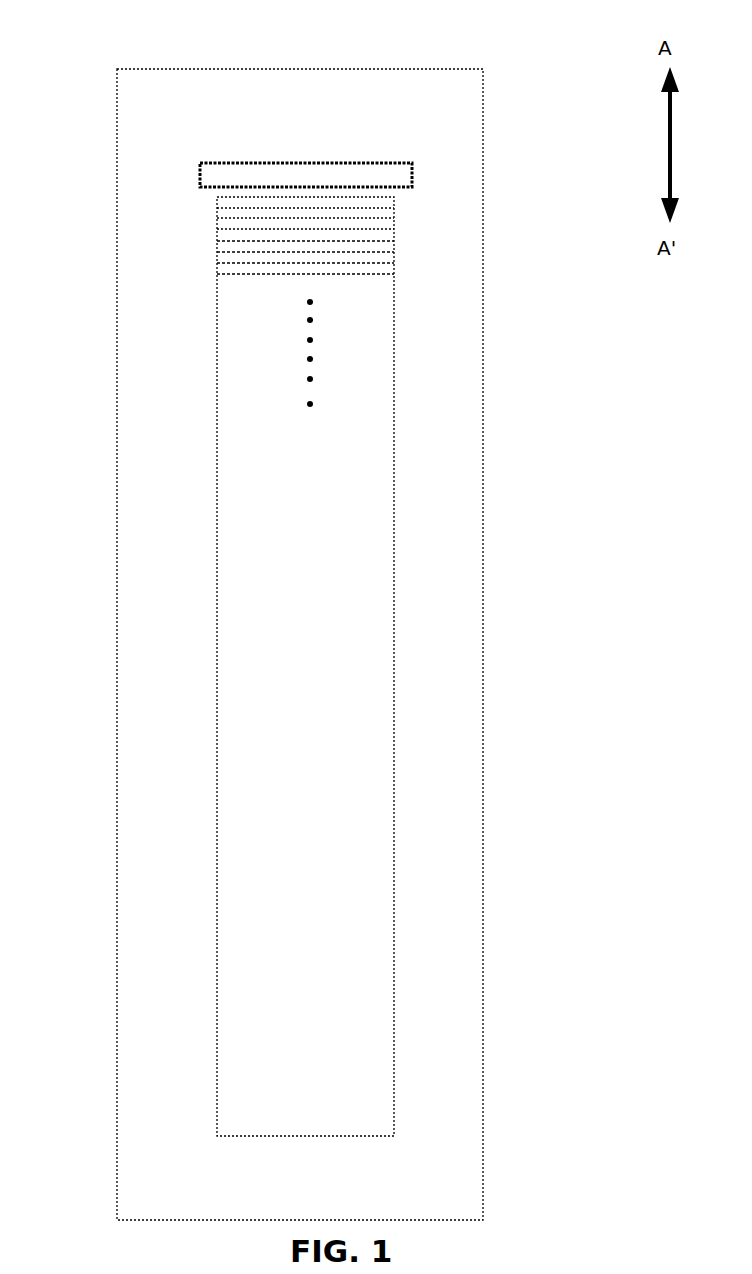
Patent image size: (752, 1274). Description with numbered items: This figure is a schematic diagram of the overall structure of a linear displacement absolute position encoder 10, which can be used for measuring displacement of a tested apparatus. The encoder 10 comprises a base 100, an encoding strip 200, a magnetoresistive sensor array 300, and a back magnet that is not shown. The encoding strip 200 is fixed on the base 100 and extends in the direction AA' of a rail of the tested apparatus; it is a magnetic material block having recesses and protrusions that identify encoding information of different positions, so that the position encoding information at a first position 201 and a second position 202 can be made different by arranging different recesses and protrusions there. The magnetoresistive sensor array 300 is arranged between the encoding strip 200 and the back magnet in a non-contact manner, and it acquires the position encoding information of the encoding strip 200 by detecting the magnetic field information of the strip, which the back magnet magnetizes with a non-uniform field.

The linear displacement absolute position encoder 10 is at (84, 23).
The base 100 is at (423, 583).
The encoding strip 200 is at (368, 373).
The first position 201 is at (382, 213).
The second position 202 is at (387, 257).
The magnetoresistive sensor array 300 is at (382, 178).